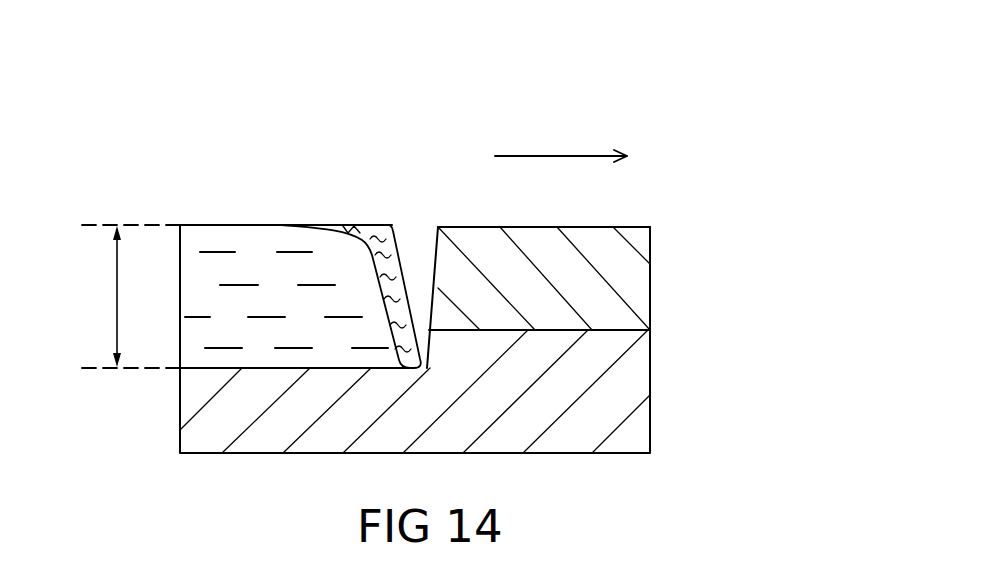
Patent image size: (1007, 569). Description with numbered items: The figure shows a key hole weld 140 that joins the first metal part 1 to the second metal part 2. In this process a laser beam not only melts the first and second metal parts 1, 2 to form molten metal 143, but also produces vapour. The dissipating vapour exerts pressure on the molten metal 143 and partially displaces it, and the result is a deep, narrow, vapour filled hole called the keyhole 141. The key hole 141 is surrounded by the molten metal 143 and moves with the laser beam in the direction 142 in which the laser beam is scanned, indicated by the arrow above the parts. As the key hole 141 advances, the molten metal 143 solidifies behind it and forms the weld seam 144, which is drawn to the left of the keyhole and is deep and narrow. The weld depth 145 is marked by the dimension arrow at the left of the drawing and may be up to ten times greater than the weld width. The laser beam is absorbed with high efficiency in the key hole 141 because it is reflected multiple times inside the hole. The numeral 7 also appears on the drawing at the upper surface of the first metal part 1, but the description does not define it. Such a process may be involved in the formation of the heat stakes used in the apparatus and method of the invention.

The first metal part 1 is at (650, 267).
The second metal part 2 is at (652, 410).
The top surface of first component 7 is at (520, 226).
The key hole weld 140 is at (95, 448).
The keyhole 141 is at (416, 218).
The direction 142 is at (560, 155).
The molten metal 143 is at (368, 223).
The weld seam 144 is at (235, 223).
The weld depth 145 is at (117, 292).